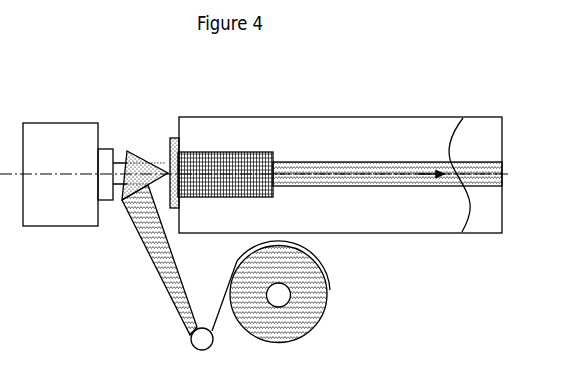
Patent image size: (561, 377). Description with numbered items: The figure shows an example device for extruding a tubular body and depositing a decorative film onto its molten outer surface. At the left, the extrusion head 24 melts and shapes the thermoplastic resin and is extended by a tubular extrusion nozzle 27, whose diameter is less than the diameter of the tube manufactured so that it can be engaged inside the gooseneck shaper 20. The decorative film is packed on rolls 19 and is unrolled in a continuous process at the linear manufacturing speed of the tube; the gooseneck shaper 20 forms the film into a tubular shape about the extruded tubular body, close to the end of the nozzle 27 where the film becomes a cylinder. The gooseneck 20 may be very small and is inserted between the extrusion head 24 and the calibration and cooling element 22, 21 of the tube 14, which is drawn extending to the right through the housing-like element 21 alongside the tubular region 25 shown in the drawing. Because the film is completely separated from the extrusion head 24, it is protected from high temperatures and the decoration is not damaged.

The tube 14 is at (400, 180).
The rolls 19 is at (325, 294).
The gooseneck shaper 20 is at (141, 151).
The calibration and cooling element 21 is at (323, 109).
The calibration and cooling element 22 is at (242, 152).
The extrusion head 24 is at (47, 156).
The tube 25 is at (380, 165).
The extrusion nozzle 27 is at (133, 173).